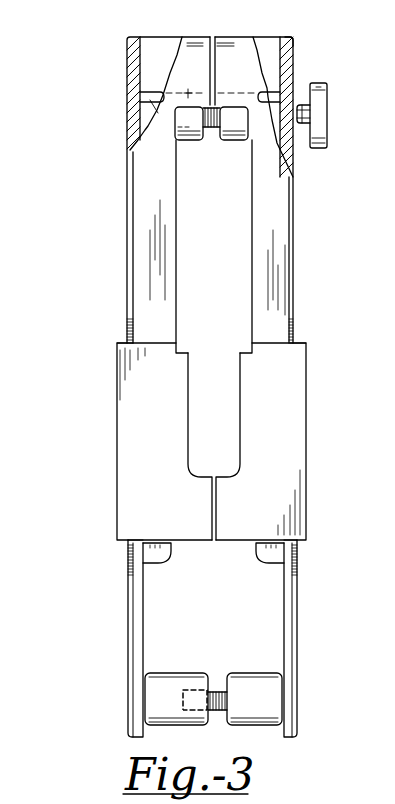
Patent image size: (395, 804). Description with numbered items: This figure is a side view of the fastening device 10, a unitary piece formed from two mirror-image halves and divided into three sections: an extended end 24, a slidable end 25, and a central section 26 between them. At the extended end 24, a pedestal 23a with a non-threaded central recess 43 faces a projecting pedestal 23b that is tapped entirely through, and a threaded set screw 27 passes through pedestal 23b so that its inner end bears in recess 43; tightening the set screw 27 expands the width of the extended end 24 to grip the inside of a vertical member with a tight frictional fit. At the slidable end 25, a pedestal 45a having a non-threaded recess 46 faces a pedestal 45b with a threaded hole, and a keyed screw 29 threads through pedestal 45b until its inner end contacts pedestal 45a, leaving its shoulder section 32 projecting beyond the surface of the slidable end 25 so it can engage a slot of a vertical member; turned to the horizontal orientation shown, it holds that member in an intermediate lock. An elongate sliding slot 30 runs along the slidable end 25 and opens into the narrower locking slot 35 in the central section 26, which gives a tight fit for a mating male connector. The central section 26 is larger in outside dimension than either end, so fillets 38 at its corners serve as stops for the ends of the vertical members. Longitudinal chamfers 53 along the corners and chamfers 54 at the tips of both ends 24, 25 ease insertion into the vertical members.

The fastening device 10 is at (109, 310).
The pedestal 23a is at (150, 673).
The projecting pedestal 23b is at (245, 673).
The extended end 24 is at (306, 617).
The slidable end 25 is at (301, 306).
The central section 26 is at (313, 436).
The set screw 27 is at (217, 692).
The keyed screw 29 is at (320, 148).
The elongate sliding slot 30 is at (228, 281).
The shoulder section 32 is at (302, 127).
The locking slot 35 is at (228, 432).
The fillets 38 is at (117, 340).
The non-threaded central recess 43 is at (183, 700).
The pedestal 45a is at (197, 141).
The pedestal 45b is at (228, 141).
The non-threaded recess 46 is at (130, 150).
The longitudinal chamfers 53 is at (127, 289).
The chamfers 54 is at (291, 38).